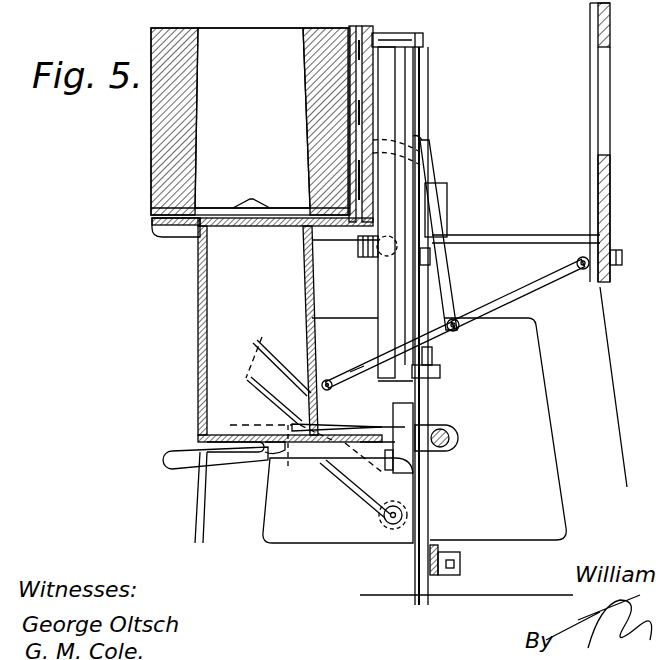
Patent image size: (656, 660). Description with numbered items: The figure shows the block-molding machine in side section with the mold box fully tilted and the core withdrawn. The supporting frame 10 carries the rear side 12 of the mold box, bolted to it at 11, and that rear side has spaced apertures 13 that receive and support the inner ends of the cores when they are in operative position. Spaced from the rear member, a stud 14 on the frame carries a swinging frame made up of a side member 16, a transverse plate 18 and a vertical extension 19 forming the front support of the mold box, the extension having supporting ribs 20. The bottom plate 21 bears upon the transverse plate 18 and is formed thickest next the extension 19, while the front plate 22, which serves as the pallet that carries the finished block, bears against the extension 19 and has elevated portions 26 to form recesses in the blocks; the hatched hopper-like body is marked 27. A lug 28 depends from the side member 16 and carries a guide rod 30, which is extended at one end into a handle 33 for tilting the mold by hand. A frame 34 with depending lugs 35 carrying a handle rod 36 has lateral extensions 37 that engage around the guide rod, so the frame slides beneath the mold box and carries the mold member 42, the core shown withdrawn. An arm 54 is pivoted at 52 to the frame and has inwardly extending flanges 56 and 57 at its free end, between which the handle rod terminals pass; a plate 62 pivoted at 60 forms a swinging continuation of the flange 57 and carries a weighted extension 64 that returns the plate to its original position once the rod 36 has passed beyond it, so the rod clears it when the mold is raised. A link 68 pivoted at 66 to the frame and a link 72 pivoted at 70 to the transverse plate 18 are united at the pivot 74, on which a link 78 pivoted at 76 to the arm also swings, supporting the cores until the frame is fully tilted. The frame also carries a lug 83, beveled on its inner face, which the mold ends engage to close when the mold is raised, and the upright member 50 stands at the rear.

The supporting frame 10 is at (612, 391).
The bolt 11 is at (622, 258).
The rear side of the mold box 12 is at (614, 40).
The spaced apertures 13 is at (606, 108).
The stud 14 is at (378, 249).
The side member 16 is at (386, 327).
The transverse plate 18 is at (373, 66).
The vertical extension 19 is at (185, 240).
The supporting ribs 20 is at (332, 242).
The bottom plate 21 is at (358, 27).
The front plate 22 is at (152, 193).
The elevated portions 26 is at (254, 196).
The hopper 27 is at (168, 30).
The lug 28 is at (425, 40).
The guide rod 30 is at (425, 111).
The handle 33 is at (421, 607).
The frame 34 is at (398, 384).
The depending lugs 35 is at (451, 437).
The handle rod 36 is at (457, 449).
The lateral extensions 37 is at (431, 256).
The mold member 42 is at (196, 342).
The rod 50 is at (596, 70).
The pivot 52 is at (380, 518).
The arm 54 is at (345, 488).
The flange 56 is at (262, 346).
The flange 57 is at (250, 394).
The pivot 60 is at (288, 462).
The plate 62 is at (346, 425).
The weighted extension 64 is at (172, 470).
The pivot 66 is at (583, 270).
The link 68 is at (527, 289).
The pivot 70 is at (374, 146).
The link 72 is at (440, 210).
The pivot 74 is at (461, 327).
The pivot 76 is at (328, 381).
The link 78 is at (357, 374).
The lug 83 is at (448, 188).